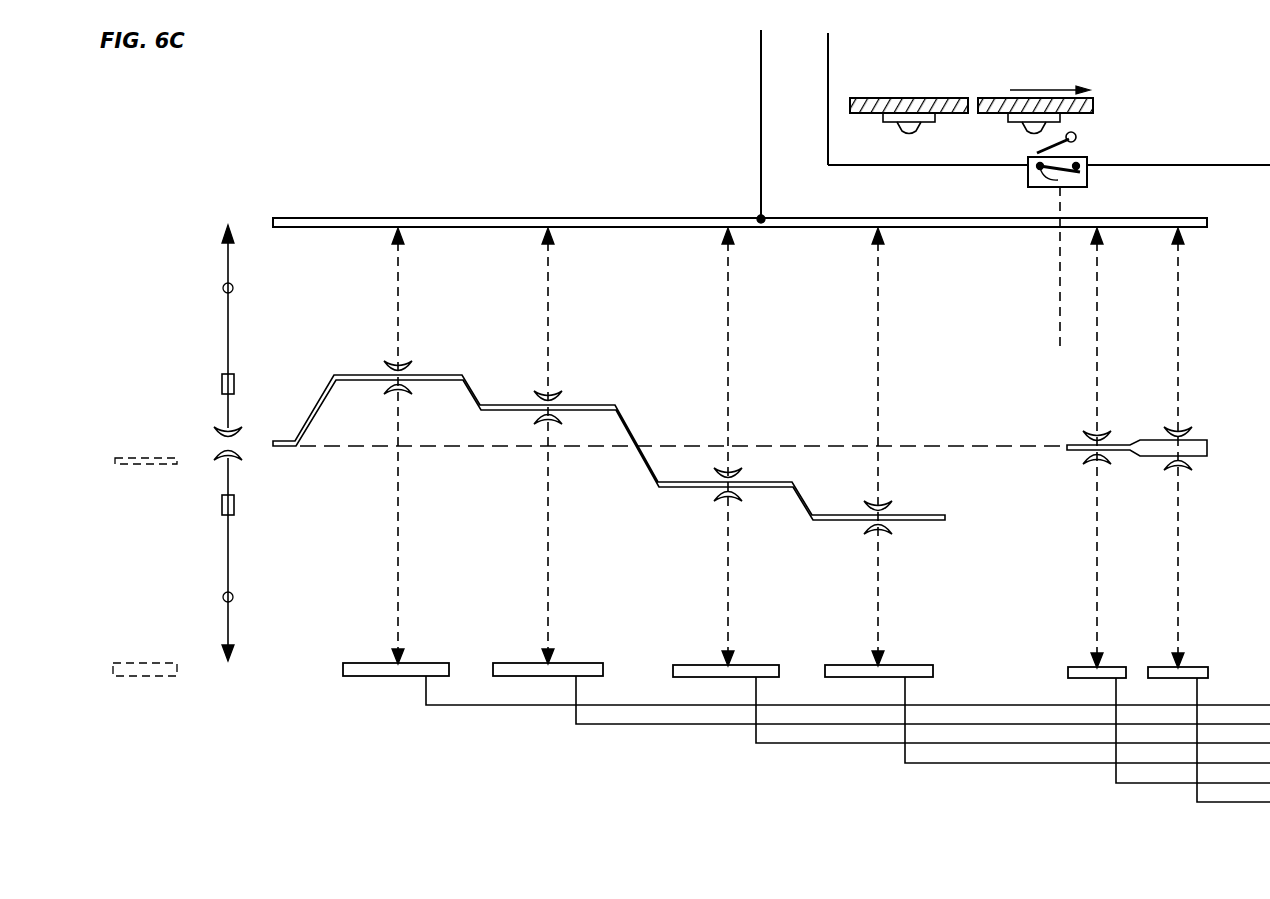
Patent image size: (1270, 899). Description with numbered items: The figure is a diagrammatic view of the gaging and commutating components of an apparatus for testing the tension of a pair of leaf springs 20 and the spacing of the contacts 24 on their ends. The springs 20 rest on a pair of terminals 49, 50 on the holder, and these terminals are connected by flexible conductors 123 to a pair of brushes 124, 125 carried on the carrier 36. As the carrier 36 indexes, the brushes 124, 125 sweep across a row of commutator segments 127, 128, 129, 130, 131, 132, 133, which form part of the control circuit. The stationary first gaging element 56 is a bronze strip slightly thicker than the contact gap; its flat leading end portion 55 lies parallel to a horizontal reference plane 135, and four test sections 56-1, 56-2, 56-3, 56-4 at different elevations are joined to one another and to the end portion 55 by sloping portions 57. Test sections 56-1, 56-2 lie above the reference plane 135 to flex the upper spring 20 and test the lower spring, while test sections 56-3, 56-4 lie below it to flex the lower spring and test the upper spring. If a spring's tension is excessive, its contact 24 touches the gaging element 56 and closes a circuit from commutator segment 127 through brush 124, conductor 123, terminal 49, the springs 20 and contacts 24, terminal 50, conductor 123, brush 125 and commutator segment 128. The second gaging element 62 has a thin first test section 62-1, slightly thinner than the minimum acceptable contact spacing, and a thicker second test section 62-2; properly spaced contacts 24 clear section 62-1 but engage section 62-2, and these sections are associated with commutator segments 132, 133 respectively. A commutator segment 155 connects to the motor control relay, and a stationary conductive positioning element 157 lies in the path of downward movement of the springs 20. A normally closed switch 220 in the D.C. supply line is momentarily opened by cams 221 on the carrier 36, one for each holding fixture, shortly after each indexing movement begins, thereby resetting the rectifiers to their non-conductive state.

The leaf spring 20 is at (228, 410).
The contact 24 is at (410, 366).
The carrier 36 is at (898, 104).
The terminal 49 is at (222, 383).
The terminal 50 is at (222, 505).
The leading end portion 55 is at (280, 441).
The first gaging element 56 is at (622, 400).
The test section 56-1 is at (348, 374).
The test section 56-2 is at (508, 404).
The test section 56-3 is at (675, 487).
The test section 56-4 is at (828, 520).
The sloping portion 57 is at (308, 412).
The second gaging element 62 is at (1216, 440).
The first test section 62-1 is at (1070, 445).
The second test section 62-2 is at (1150, 440).
The flexible conductor 123 is at (228, 330).
The brush 124 is at (228, 268).
The brush 125 is at (228, 626).
The commutator segment 127 is at (629, 218).
The commutator segment 128 is at (360, 664).
The commutator segment 129 is at (520, 664).
The commutator segment 130 is at (697, 666).
The commutator segment 131 is at (848, 666).
The commutator segment 132 is at (1074, 666).
The commutator segment 133 is at (1188, 666).
The horizontal reference plane 135 is at (530, 447).
The commutator segment 155 is at (142, 676).
The positioning element 157 is at (147, 464).
The switch 220 is at (1028, 176).
The cam 221 is at (906, 132).